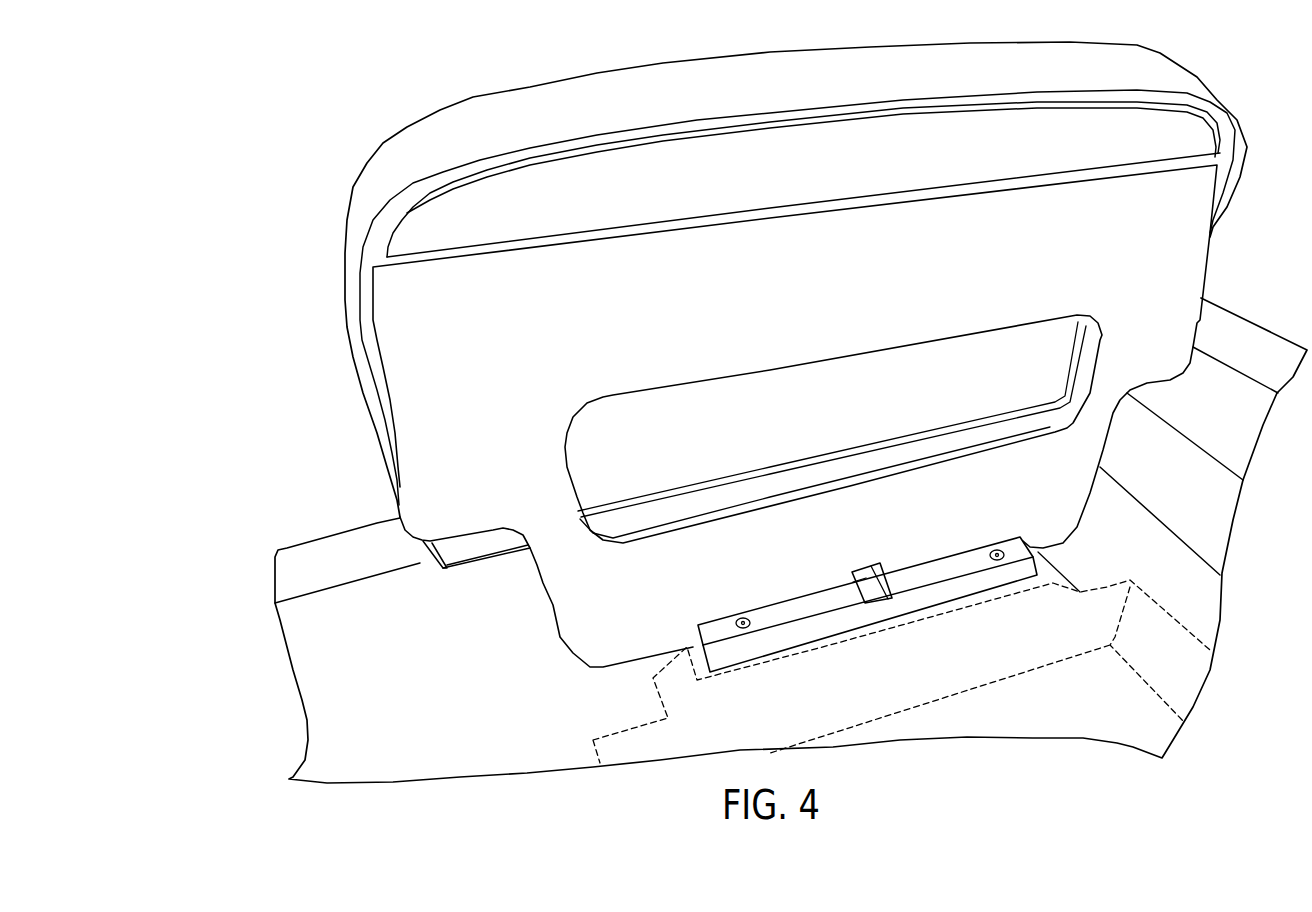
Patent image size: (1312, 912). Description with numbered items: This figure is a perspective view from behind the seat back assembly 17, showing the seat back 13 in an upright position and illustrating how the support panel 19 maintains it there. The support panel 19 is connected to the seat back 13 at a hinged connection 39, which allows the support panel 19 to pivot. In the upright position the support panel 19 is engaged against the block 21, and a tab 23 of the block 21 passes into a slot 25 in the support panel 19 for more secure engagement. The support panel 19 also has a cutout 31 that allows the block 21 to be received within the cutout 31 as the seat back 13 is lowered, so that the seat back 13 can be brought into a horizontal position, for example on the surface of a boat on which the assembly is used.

The seat back 13 is at (1178, 70).
The seat back assembly 17 is at (305, 347).
The support panel 19 is at (1190, 268).
The block 21 is at (1023, 541).
The tab 23 is at (875, 588).
The slot 25 is at (867, 563).
The cutout 31 is at (837, 425).
The hinged connection 39 is at (1205, 162).